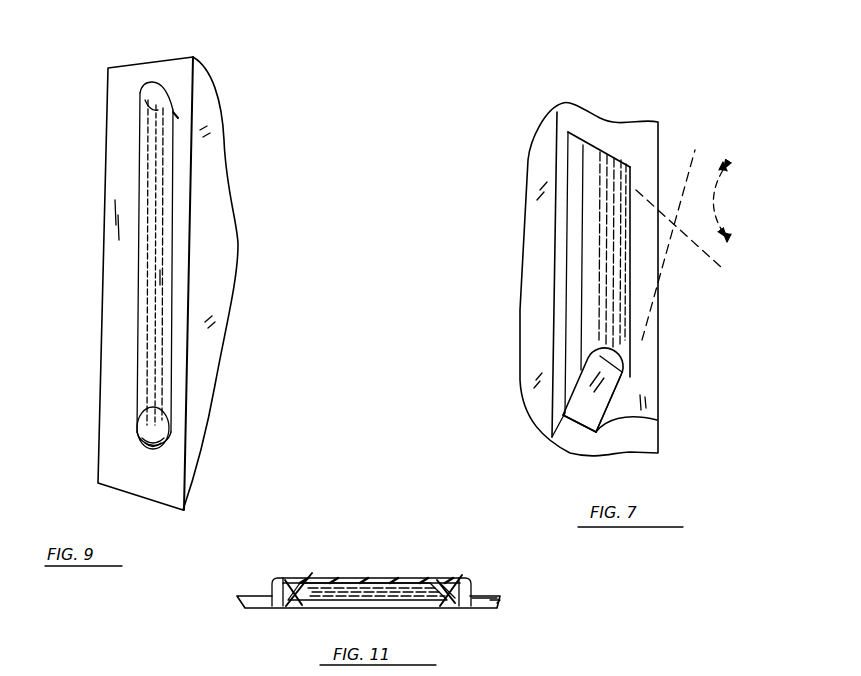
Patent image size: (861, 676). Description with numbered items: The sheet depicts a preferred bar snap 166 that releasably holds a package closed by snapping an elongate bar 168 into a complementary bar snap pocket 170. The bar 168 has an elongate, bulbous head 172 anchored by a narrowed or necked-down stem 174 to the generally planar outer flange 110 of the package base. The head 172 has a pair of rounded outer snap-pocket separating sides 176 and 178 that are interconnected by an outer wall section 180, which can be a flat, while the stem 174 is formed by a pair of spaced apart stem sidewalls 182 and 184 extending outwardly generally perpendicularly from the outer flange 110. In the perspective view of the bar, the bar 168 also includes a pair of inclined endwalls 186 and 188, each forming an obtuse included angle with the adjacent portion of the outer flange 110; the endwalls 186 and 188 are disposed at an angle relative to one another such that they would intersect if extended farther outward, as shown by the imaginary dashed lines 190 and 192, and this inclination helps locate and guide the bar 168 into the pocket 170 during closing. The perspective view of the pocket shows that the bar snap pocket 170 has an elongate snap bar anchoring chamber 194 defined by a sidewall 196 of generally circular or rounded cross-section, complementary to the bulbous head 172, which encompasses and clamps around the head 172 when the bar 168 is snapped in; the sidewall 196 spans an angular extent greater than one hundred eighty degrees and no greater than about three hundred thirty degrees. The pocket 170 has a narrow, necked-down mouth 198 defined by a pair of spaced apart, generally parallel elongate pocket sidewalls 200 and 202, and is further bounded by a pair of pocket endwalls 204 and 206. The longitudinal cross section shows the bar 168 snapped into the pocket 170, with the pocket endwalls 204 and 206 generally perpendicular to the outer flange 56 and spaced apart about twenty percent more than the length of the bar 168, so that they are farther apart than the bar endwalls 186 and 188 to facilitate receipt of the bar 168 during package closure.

In FIG. 9, the outer flange 56 is at (115, 213).
In FIG. 11, the outer flange 56 is at (490, 598).
In FIG. 7, the outer flange 110 is at (645, 405).
In FIG. 11, the outer flange 110 is at (490, 607).
In FIG. 11, the bar snap 166 is at (323, 572).
In FIG. 7, the bar 168 is at (636, 337).
In FIG. 11, the bar 168 is at (313, 609).
In FIG. 9, the bar snap pocket 170 is at (132, 383).
In FIG. 11, the bar snap pocket 170 is at (410, 574).
In FIG. 7, the head 172 is at (629, 368).
In FIG. 11, the head 172 is at (382, 580).
In FIG. 7, the stem 174 is at (565, 398).
In FIG. 7, the snap-pocket separating side 176 is at (627, 381).
In FIG. 7, the snap-pocket separating side 178 is at (600, 188).
In FIG. 7, the outer wall section 180 is at (633, 193).
In FIG. 7, the stem sidewall 182 is at (598, 431).
In FIG. 7, the stem sidewall 184 is at (575, 278).
In FIG. 7, the inclined endwall 186 is at (610, 403).
In FIG. 11, the inclined endwall 186 is at (453, 578).
In FIG. 7, the inclined endwall 188 is at (593, 140).
In FIG. 11, the inclined endwall 188 is at (277, 567).
In FIG. 7, the dashed line 190 is at (686, 235).
In FIG. 7, the dashed line 192 is at (687, 235).
In FIG. 9, the snap bar anchoring chamber 194 is at (160, 258).
In FIG. 9, the sidewall 196 is at (163, 347).
In FIG. 9, the mouth 198 is at (183, 117).
In FIG. 9, the pocket sidewall 200 is at (169, 286).
In FIG. 9, the pocket sidewall 202 is at (148, 172).
In FIG. 9, the pocket endwall 204 is at (168, 413).
In FIG. 11, the pocket endwall 204 is at (470, 588).
In FIG. 9, the pocket endwall 206 is at (156, 86).
In FIG. 11, the pocket endwall 206 is at (272, 584).